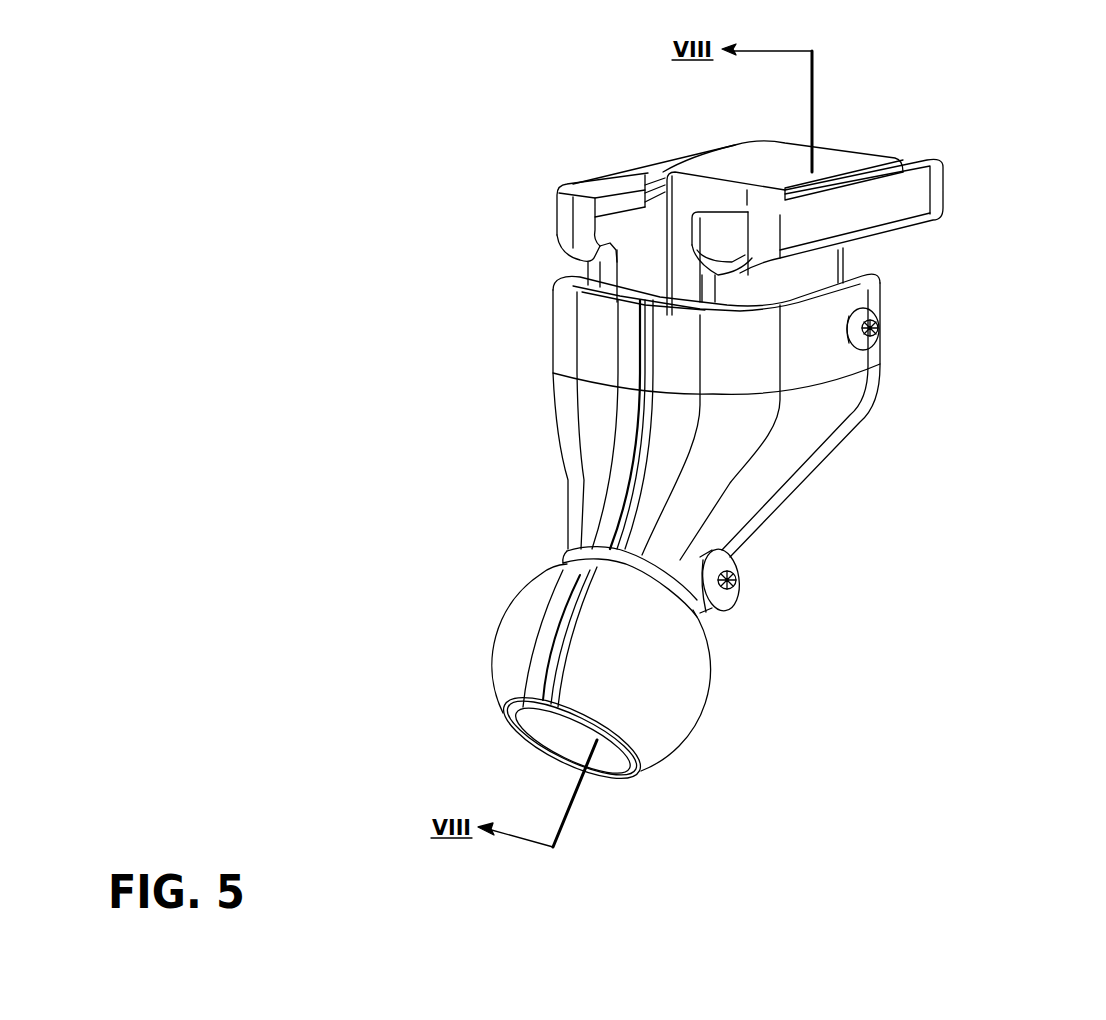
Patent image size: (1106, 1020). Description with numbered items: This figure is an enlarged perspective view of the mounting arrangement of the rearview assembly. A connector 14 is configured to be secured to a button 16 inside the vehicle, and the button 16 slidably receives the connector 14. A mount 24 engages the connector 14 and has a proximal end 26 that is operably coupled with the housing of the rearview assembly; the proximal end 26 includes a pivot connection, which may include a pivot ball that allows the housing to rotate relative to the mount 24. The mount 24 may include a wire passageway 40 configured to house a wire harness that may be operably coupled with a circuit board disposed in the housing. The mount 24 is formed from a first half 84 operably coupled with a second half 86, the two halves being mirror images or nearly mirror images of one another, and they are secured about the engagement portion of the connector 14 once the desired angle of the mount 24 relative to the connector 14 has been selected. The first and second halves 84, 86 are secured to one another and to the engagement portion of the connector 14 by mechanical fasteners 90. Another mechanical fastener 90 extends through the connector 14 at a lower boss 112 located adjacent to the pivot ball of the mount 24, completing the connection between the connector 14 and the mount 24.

The connector 14 is at (887, 212).
The button 16 is at (843, 163).
The mount 24 is at (777, 462).
The proximal end 26 is at (637, 690).
The wire passageway 40 is at (540, 730).
The first half 84 is at (577, 480).
The second half 86 is at (752, 518).
The mechanical fasteners 90 is at (862, 317).
The lower boss 112 is at (715, 607).